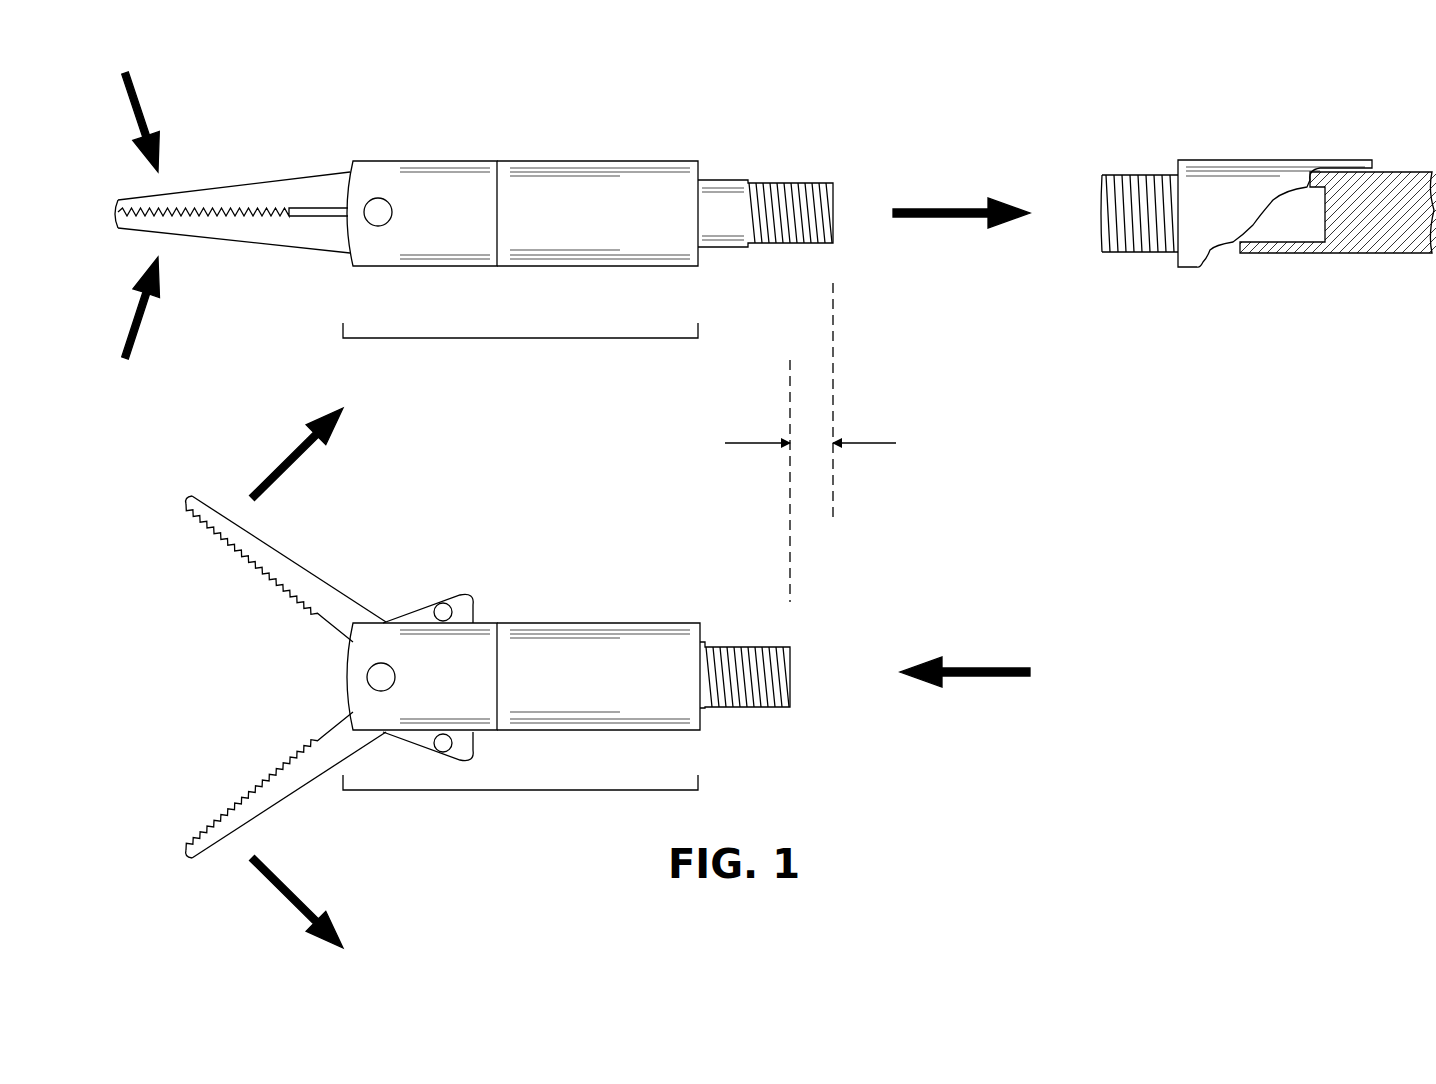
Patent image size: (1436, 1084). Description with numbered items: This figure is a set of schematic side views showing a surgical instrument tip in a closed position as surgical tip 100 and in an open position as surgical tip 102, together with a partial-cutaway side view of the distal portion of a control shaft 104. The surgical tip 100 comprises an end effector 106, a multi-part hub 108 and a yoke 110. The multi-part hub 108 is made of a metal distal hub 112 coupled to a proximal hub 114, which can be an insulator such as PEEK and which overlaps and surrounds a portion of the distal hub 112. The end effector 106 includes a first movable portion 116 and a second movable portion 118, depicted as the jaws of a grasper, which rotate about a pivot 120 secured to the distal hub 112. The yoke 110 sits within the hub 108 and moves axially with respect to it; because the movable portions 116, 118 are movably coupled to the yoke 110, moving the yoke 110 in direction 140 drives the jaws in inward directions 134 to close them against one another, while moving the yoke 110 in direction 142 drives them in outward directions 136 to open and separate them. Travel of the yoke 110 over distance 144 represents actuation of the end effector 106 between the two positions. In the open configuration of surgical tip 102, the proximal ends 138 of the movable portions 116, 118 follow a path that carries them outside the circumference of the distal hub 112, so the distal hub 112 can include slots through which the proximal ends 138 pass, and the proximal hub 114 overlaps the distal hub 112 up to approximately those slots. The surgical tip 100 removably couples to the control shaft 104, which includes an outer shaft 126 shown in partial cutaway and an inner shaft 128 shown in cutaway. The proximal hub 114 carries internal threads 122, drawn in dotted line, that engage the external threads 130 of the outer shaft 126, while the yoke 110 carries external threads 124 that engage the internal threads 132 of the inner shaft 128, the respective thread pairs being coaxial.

The surgical tip 100 is at (878, 98).
The surgical tip 102 is at (978, 524).
The control shaft 104 is at (1128, 98).
The end effector 106 is at (118, 258).
The multi-part hub 108 is at (535, 340).
The yoke 110 is at (722, 180).
The distal hub 112 is at (390, 160).
The proximal hub 114 is at (608, 160).
The first movable portion 116 is at (225, 172).
The second movable portion 118 is at (222, 250).
The pivot 120 is at (380, 226).
The threads 122 is at (664, 243).
The threads 124 is at (800, 167).
The outer shaft 126 is at (1227, 160).
The inner shaft 128 is at (1410, 172).
The threads 130 is at (1143, 278).
The threads 132 is at (1292, 234).
The inward directions 134 is at (138, 93).
The outward directions 136 is at (270, 470).
The proximal ends 138 is at (468, 597).
The direction 140 is at (938, 220).
The direction 142 is at (985, 678).
The distance 144 is at (869, 443).